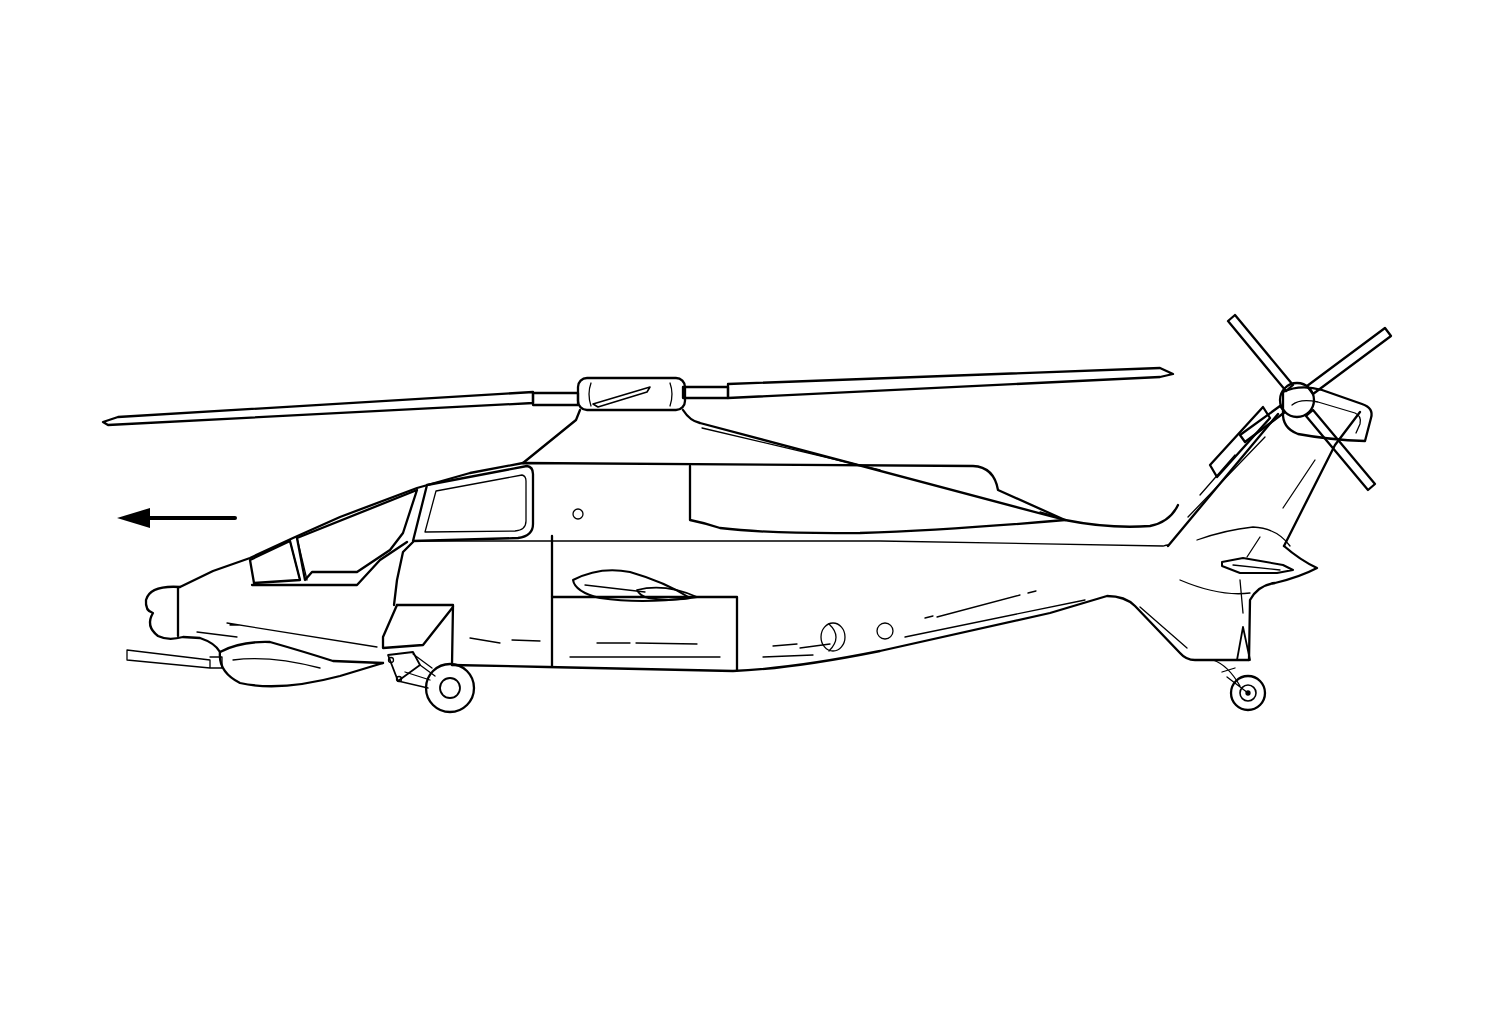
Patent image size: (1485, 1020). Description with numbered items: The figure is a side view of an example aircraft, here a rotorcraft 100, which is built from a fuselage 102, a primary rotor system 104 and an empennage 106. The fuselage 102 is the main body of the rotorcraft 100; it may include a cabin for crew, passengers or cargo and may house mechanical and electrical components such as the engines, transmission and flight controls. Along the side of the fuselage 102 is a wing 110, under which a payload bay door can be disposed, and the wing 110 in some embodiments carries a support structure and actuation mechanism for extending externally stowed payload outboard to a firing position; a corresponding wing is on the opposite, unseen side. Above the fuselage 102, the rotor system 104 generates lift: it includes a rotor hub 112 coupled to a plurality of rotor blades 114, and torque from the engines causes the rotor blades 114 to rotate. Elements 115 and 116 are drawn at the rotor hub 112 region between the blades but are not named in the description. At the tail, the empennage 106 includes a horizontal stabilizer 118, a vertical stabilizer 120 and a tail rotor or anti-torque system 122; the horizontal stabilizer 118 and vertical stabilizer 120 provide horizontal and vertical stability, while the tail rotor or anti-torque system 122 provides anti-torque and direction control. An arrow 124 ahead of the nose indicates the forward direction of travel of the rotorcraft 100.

The rotorcraft 100 is at (385, 203).
The fuselage 102 is at (847, 555).
The primary rotor system 104 is at (657, 288).
The empennage 106 is at (1392, 396).
The wing 110 is at (650, 568).
The rotor hub 112 is at (647, 372).
The rotor blades 114 is at (330, 404).
The blade root connectors 115 is at (555, 393).
The rotor hub fairing slot 116 is at (617, 380).
The horizontal stabilizer 118 is at (1273, 576).
The vertical stabilizer 120 is at (1310, 494).
The tail rotor or anti-torque system 122 is at (1354, 351).
The arrow 124 is at (188, 520).